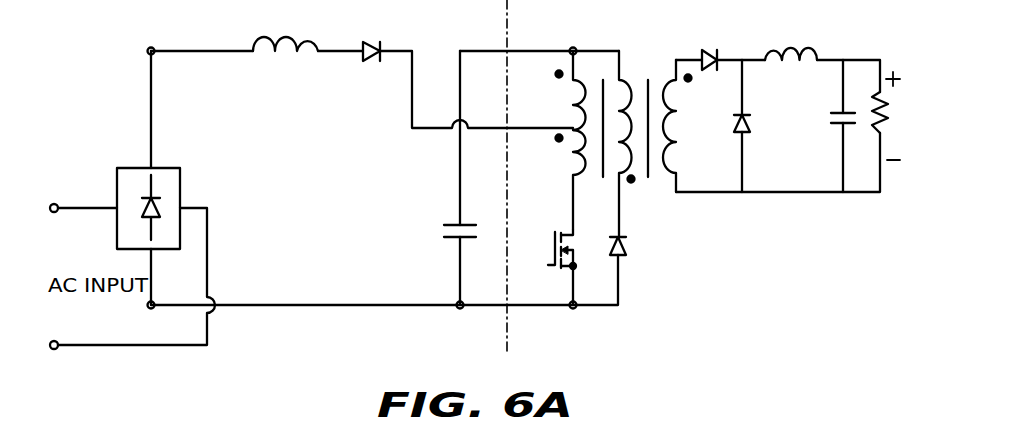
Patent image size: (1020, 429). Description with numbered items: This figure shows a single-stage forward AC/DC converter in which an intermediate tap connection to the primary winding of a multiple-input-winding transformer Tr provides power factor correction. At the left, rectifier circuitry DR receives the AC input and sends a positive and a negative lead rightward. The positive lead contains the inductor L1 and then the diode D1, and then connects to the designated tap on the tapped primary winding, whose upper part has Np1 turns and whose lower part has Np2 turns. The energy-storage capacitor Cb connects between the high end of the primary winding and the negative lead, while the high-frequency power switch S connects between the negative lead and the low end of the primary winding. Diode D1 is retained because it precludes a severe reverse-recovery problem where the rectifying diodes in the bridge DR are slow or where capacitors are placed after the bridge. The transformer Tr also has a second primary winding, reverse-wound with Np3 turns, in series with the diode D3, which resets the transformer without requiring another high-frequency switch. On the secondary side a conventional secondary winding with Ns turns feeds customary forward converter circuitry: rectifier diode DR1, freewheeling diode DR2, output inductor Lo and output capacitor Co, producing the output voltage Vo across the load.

The rectifier circuitry DR is at (148, 197).
The inductor L1 is at (285, 31).
The diode D1 is at (367, 46).
The energy-storage capacitor Cb is at (449, 238).
The isolation transformer Tr is at (617, 140).
The upper part of tapped primary winding Np1 is at (556, 90).
The lower part of tapped primary winding Np2 is at (556, 180).
The second primary winding Np3 is at (635, 127).
The secondary winding Ns is at (685, 126).
The high-frequency power switch S is at (549, 267).
The diode D3 is at (636, 258).
The rectifier diode DR1 is at (713, 44).
The freewheeling diode DR2 is at (767, 131).
The output inductor Lo is at (791, 38).
The output capacitor Co is at (831, 102).
The output voltage Vo is at (894, 116).